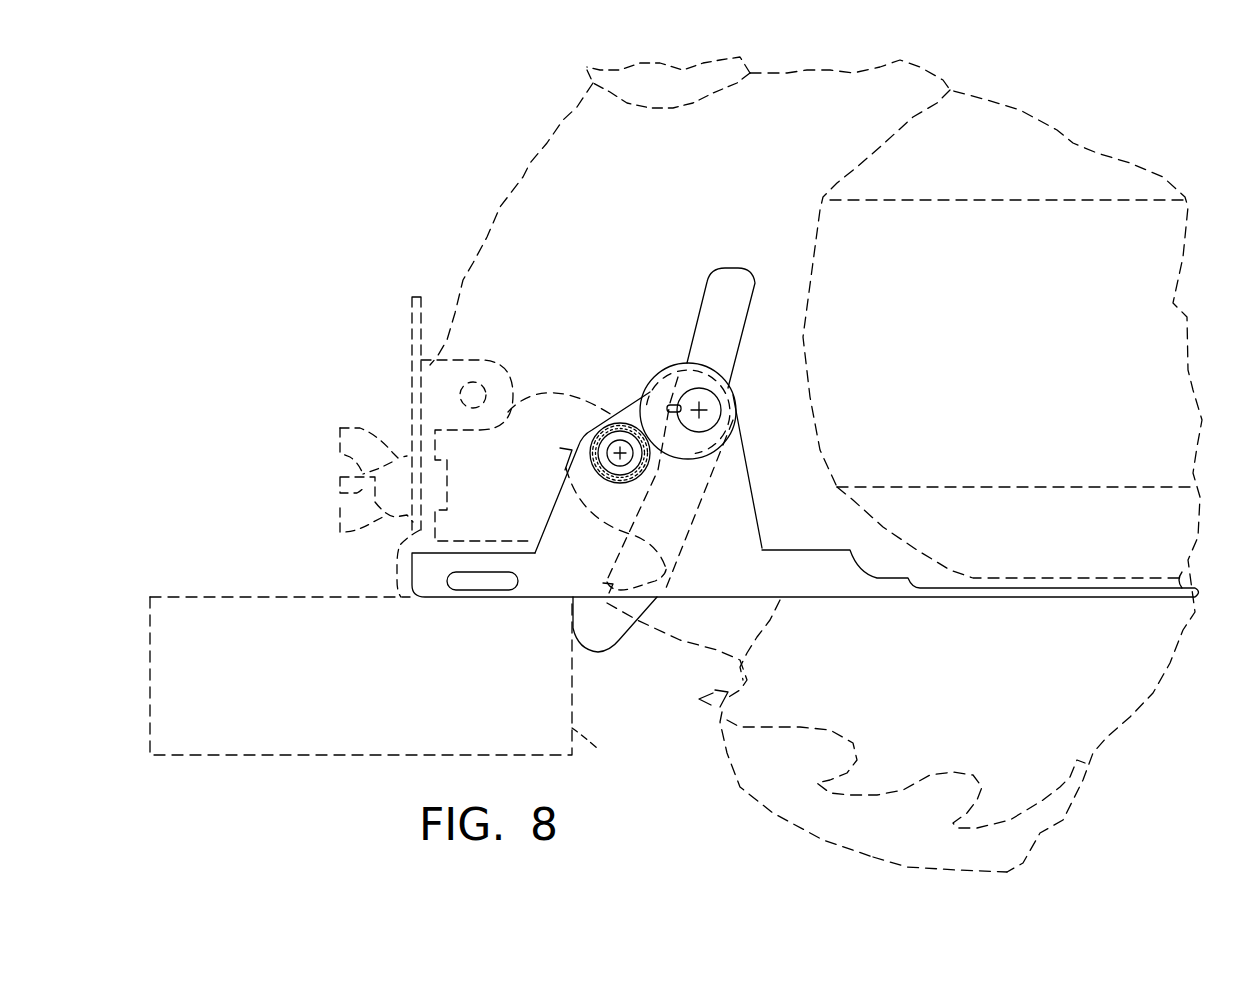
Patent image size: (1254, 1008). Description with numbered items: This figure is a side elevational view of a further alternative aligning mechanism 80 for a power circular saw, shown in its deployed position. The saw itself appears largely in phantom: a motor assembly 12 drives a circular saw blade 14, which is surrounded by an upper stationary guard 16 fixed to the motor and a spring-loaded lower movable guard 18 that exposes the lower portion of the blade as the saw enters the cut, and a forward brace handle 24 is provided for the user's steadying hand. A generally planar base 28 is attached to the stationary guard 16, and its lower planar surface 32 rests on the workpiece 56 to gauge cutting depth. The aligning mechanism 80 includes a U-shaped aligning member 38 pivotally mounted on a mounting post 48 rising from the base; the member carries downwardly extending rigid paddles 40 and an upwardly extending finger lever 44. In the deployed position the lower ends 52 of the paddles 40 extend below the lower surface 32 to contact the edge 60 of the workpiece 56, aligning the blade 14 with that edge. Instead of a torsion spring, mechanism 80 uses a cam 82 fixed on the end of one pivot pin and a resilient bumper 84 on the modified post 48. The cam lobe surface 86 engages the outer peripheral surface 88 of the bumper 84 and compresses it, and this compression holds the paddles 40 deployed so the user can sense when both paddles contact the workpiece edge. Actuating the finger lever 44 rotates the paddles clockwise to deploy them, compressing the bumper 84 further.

The motor assembly 12 is at (1180, 281).
The circular saw blade 14 is at (773, 720).
The upper stationary guard 16 is at (522, 180).
The lower movable guard 18 is at (897, 864).
The forward brace handle 24 is at (683, 70).
The base 28 is at (404, 561).
The lower planar surface 32 is at (733, 598).
The U-shaped aligning member 38 is at (728, 358).
The paddles 40 is at (683, 543).
The finger lever 44 is at (746, 217).
The mounting post 48 is at (792, 464).
The lower ends 52 is at (607, 640).
The workpiece 56 is at (360, 745).
The edge 60 is at (598, 747).
The aligning mechanism 80 is at (664, 305).
The cam 82 is at (697, 452).
The resilient bumper 84 is at (621, 428).
The cam lobe surface 86 is at (675, 367).
The outer peripheral surface 88 is at (630, 482).